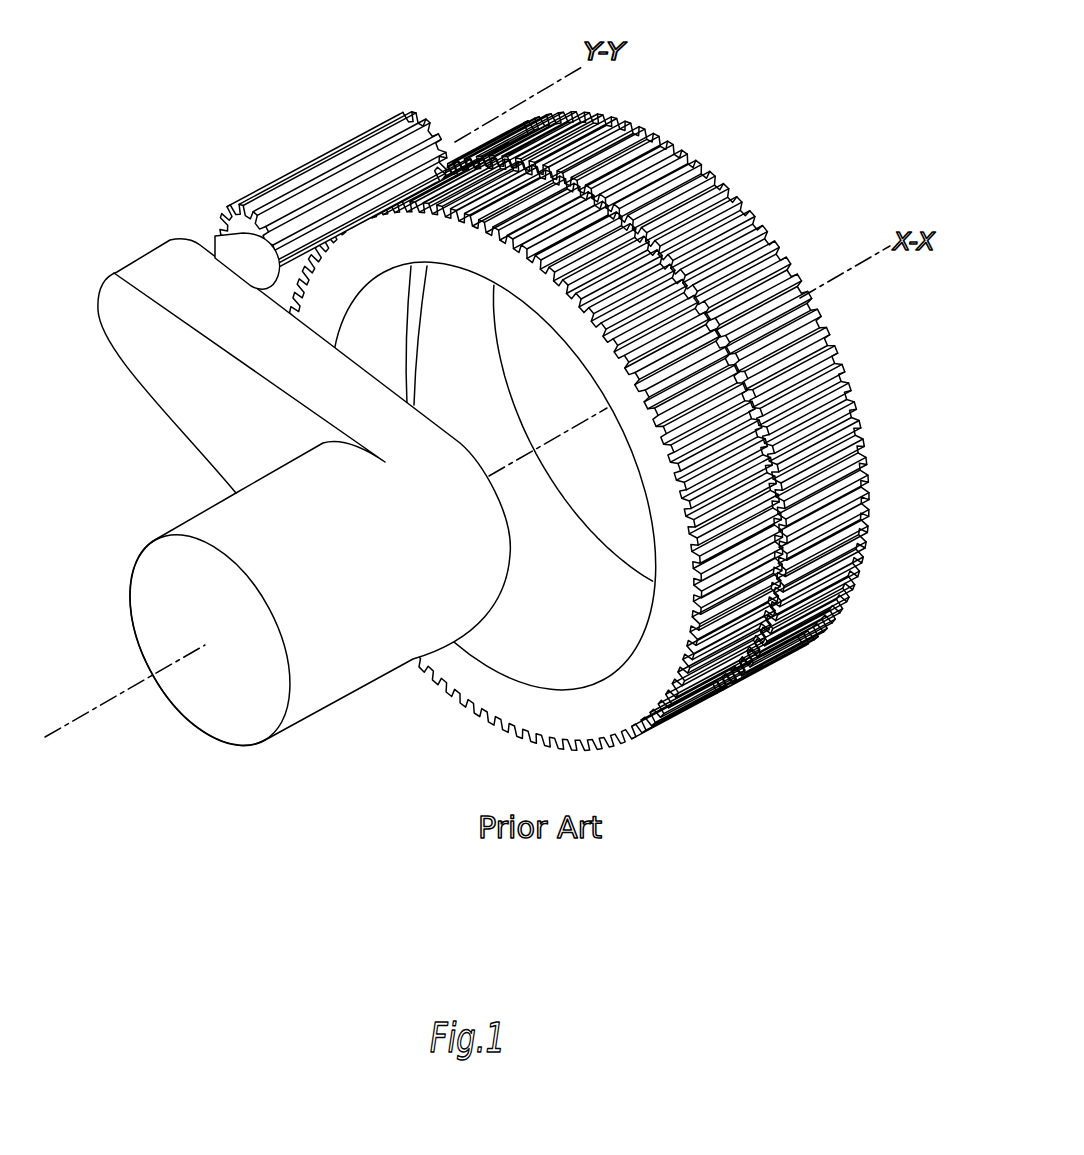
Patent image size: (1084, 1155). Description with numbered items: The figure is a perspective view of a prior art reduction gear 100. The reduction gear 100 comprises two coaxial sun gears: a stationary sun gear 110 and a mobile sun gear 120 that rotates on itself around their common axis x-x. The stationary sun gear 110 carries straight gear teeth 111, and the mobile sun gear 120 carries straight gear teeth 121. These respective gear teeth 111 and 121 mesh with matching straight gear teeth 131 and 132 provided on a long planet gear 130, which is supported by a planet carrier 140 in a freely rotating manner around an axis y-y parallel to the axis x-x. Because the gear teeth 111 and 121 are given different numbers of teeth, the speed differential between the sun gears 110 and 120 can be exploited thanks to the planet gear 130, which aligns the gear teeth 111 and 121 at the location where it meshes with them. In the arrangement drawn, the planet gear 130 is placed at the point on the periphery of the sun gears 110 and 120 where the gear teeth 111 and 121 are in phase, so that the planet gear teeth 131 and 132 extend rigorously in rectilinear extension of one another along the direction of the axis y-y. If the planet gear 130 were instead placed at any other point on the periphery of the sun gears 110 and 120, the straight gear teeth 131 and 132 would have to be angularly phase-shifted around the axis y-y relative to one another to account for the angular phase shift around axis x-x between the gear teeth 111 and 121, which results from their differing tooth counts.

The reduction gear 100 is at (598, 421).
The stationary sun gear 110 is at (549, 472).
The straight gear teeth of the stationary sun gear 111 is at (683, 473).
The mobile sun gear 120 is at (483, 675).
The straight gear teeth of the mobile sun gear 121 is at (722, 700).
The long planet gear 130 is at (256, 151).
The straight gear teeth of the planet gear 131 is at (388, 125).
The straight gear teeth of the planet gear 132 is at (263, 197).
The planet carrier 140 is at (203, 407).